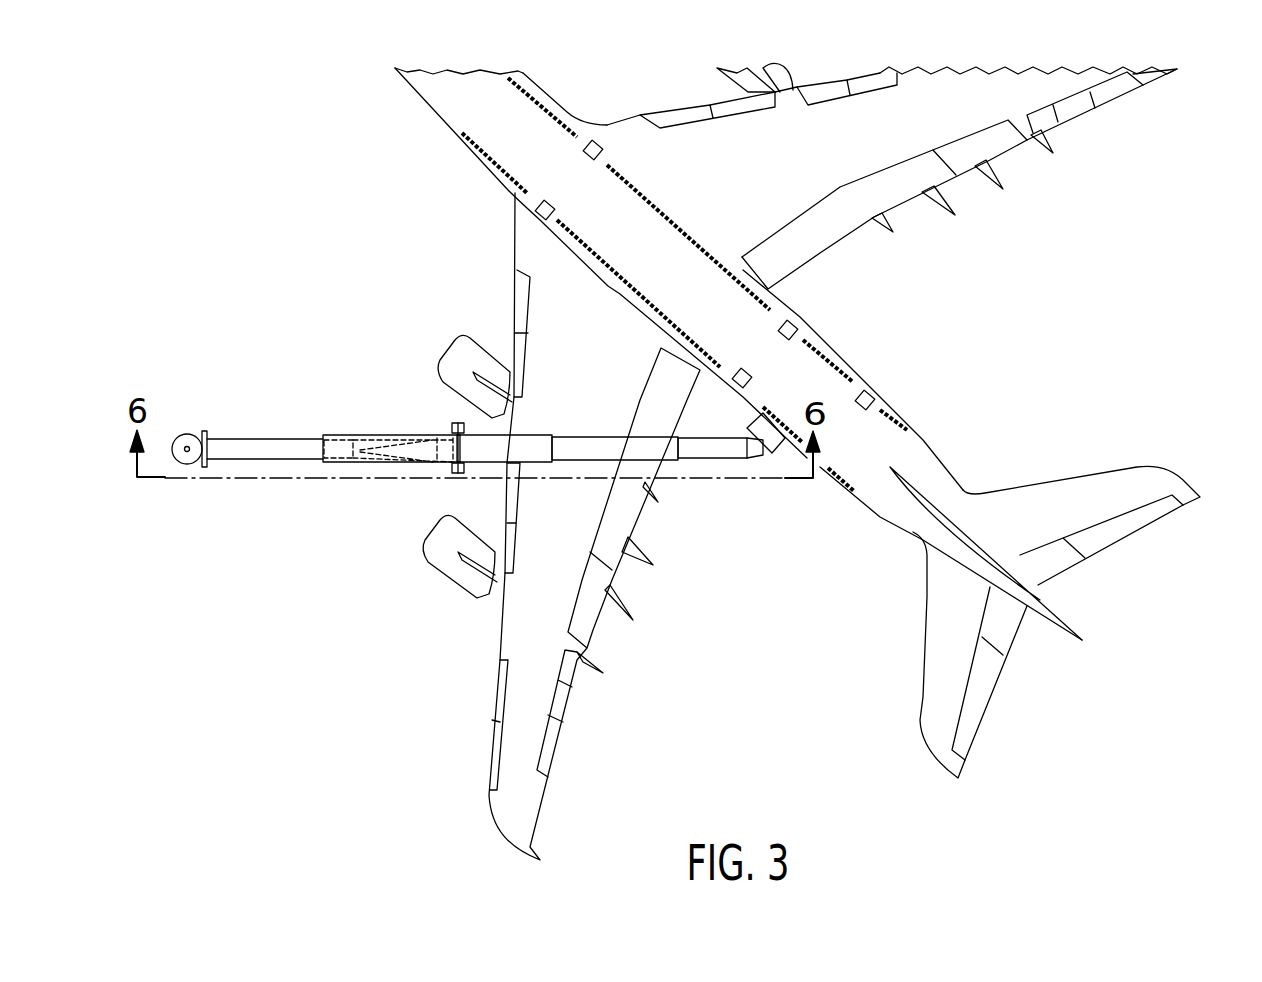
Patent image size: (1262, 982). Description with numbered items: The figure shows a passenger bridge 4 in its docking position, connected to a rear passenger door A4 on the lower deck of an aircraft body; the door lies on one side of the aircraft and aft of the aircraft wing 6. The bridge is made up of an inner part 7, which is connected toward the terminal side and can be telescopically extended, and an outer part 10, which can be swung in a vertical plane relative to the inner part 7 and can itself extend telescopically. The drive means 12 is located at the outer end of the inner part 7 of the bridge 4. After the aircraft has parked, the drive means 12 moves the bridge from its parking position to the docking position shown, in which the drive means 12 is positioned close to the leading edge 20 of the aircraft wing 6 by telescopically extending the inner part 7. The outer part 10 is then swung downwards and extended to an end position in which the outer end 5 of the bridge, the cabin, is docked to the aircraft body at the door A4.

The passenger bridge 4 is at (226, 445).
The inner part of the bridge 7 is at (283, 445).
The drive means 12 is at (448, 427).
The outer part of the bridge 10 is at (535, 448).
The outer end of the passenger bridge 5 is at (747, 435).
The passenger door A4 is at (773, 423).
The leading edge of the aircraft wing 20 is at (502, 493).
The aircraft wing 6 is at (503, 637).